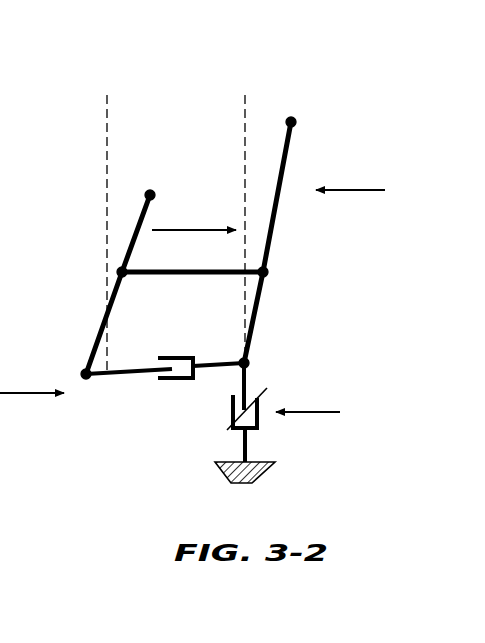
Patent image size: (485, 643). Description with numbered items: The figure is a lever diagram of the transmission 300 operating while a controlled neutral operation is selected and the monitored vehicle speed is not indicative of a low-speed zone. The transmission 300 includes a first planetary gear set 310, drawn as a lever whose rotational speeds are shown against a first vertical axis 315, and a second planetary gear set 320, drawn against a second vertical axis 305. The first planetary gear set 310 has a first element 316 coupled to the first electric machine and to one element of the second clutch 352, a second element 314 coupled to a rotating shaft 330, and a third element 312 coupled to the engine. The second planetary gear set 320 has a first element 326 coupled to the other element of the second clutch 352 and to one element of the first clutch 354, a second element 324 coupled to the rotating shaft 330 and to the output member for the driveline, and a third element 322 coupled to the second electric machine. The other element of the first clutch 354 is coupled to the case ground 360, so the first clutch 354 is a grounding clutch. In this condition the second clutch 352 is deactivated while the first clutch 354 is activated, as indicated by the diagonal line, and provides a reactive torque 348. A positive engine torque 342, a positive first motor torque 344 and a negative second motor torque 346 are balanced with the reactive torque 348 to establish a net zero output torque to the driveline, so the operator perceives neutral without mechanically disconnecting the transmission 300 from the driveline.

The transmission 300 is at (94, 117).
The second vertical axis 305 is at (245, 103).
The first planetary gear set 310 is at (121, 221).
The third element 312 is at (153, 195).
The second element 314 is at (118, 272).
The first vertical axis 315 is at (107, 138).
The first element 316 is at (84, 372).
The second planetary gear set 320 is at (292, 101).
The third element 322 is at (296, 122).
The second element 324 is at (268, 272).
The first element 326 is at (250, 363).
The rotating shaft 330 is at (183, 275).
The engine torque 342 is at (206, 225).
The first motor torque 344 is at (40, 391).
The second motor torque 346 is at (376, 186).
The reactive torque 348 is at (336, 408).
The second clutch 352 is at (175, 380).
The first clutch 354 is at (258, 408).
The case ground 360 is at (220, 472).